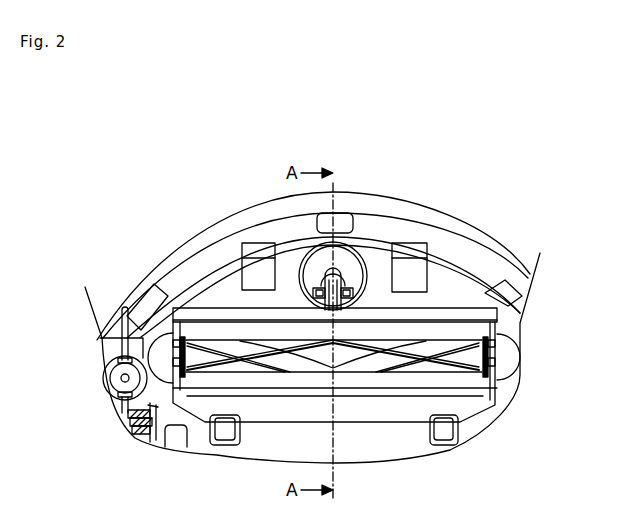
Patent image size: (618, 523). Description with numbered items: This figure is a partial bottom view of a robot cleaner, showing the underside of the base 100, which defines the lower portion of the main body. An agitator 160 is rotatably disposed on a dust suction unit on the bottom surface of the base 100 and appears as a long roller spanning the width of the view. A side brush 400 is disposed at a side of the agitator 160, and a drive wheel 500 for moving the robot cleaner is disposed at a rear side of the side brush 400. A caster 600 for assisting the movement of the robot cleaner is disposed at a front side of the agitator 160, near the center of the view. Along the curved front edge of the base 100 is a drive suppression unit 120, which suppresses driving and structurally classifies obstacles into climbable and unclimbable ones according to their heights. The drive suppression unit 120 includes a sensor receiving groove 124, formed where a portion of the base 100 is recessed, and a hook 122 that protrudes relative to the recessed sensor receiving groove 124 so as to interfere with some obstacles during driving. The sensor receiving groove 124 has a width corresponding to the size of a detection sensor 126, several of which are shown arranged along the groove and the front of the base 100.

The base 100 is at (467, 292).
The drive suppression unit 120 is at (336, 257).
The hook 122 is at (405, 207).
The sensor receiving groove 124 is at (432, 243).
The detection sensor 126 is at (145, 302).
The agitator 160 is at (457, 357).
The side brush 400 is at (121, 378).
The drive wheel 500 is at (148, 434).
The caster 600 is at (323, 253).